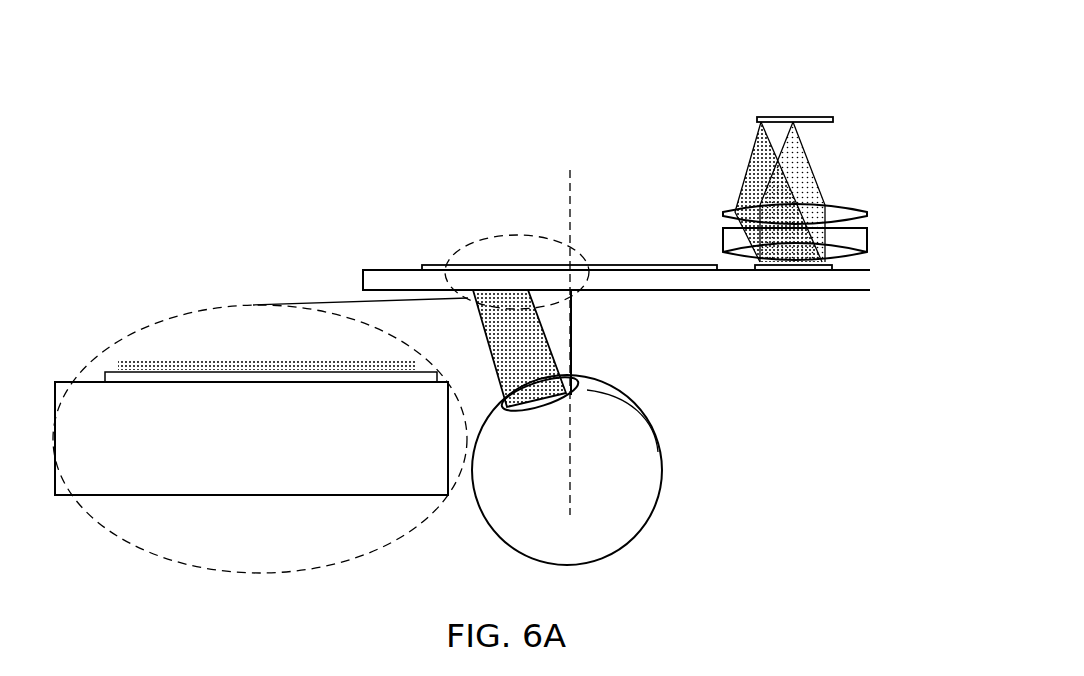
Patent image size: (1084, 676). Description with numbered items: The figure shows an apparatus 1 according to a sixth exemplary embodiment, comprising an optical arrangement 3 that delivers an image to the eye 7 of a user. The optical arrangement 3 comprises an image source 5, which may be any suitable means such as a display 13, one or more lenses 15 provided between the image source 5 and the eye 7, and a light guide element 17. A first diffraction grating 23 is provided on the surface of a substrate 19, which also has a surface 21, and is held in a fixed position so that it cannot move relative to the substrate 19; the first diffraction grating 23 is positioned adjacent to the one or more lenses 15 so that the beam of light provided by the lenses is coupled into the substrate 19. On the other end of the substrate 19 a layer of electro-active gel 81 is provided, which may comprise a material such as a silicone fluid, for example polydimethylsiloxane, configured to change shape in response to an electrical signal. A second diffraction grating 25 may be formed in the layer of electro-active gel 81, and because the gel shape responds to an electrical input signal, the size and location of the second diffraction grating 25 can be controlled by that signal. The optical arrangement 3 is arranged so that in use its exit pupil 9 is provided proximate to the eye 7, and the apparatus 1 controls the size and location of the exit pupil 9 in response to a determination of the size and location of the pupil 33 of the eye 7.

The apparatus 1 is at (870, 172).
The optical arrangement 3 is at (819, 324).
The image source 5 is at (793, 116).
The eye 7 is at (658, 497).
The exit pupil 9 is at (573, 380).
The display 13 is at (833, 118).
The lenses 15 is at (867, 214).
The light guide element 17 is at (838, 288).
The substrate 19 is at (697, 265).
The surface of substrate 21 is at (690, 292).
The first diffraction grating 23 is at (832, 268).
The second diffraction grating 25 is at (210, 362).
The pupil 33 is at (658, 452).
The layer of electro-active gel 81 is at (260, 363).